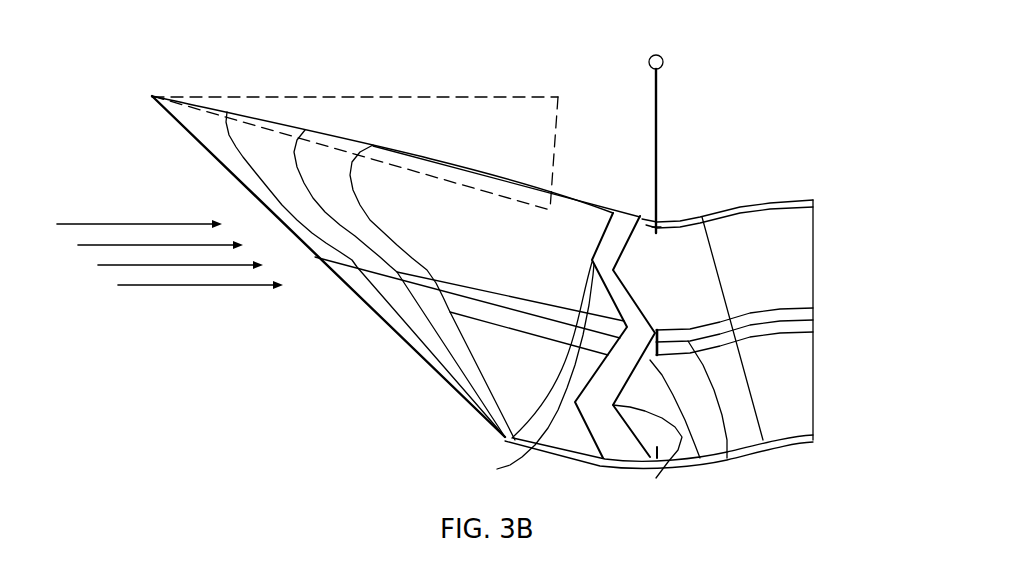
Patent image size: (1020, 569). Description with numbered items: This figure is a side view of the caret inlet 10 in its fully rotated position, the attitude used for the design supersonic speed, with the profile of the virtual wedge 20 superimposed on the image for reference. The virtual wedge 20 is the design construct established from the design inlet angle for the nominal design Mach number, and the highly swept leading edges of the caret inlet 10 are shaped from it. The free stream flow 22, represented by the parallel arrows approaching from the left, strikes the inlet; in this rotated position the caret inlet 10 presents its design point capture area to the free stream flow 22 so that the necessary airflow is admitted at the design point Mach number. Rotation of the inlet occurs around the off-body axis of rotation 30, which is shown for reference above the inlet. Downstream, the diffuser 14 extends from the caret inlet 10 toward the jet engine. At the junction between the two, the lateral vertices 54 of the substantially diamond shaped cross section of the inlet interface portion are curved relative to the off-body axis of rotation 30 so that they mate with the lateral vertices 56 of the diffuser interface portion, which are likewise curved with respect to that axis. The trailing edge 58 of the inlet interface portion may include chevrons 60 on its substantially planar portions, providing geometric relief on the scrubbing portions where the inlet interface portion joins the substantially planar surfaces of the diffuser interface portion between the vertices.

The caret inlet 10 is at (396, 156).
The diffuser 14 is at (754, 285).
The virtual wedge 20 is at (355, 127).
The free stream flow 22 is at (170, 282).
The off-body axis of rotation 30 is at (706, 244).
The lateral vertices of the inlet interface portion 54 is at (515, 366).
The lateral vertices of the diffuser interface portion 56 is at (747, 415).
The trailing edge 58 is at (724, 440).
The chevrons 60 is at (664, 466).